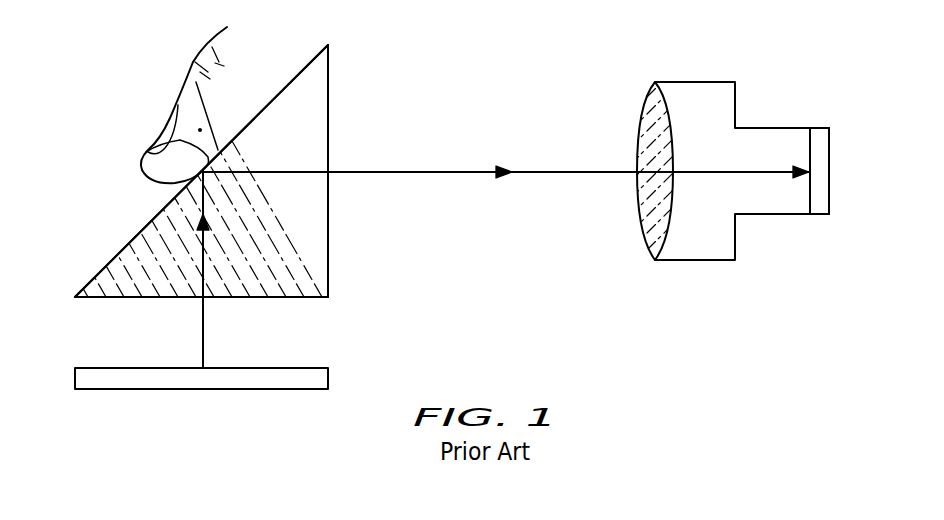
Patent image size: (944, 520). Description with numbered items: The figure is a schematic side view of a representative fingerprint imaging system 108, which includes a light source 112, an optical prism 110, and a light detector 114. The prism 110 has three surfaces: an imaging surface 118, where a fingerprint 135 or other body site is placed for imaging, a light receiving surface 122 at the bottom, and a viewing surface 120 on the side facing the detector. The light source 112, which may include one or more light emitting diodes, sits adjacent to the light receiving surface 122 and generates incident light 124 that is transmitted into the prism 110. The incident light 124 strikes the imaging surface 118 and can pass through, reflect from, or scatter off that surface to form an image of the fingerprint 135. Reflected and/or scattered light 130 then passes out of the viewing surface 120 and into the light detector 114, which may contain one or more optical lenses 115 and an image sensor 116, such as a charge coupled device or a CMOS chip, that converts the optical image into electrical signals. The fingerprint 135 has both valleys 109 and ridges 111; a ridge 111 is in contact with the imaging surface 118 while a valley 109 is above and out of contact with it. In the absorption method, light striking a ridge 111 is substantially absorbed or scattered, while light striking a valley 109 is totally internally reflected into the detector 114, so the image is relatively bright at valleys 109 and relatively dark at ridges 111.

The fingerprint imaging system 108 is at (528, 68).
The valleys 109 is at (160, 147).
The optical prism 110 is at (316, 228).
The ridges 111 is at (186, 58).
The light source 112 is at (172, 390).
The light detector 114 is at (700, 262).
The optical lens 115 is at (637, 130).
The image sensor 116 is at (831, 160).
The imaging surface 118 is at (126, 246).
The viewing surface 120 is at (332, 102).
The light receiving surface 122 is at (298, 298).
The incident light 124 is at (198, 340).
The reflected and/or scattered light 130 is at (443, 167).
The fingerprint 135 is at (196, 126).